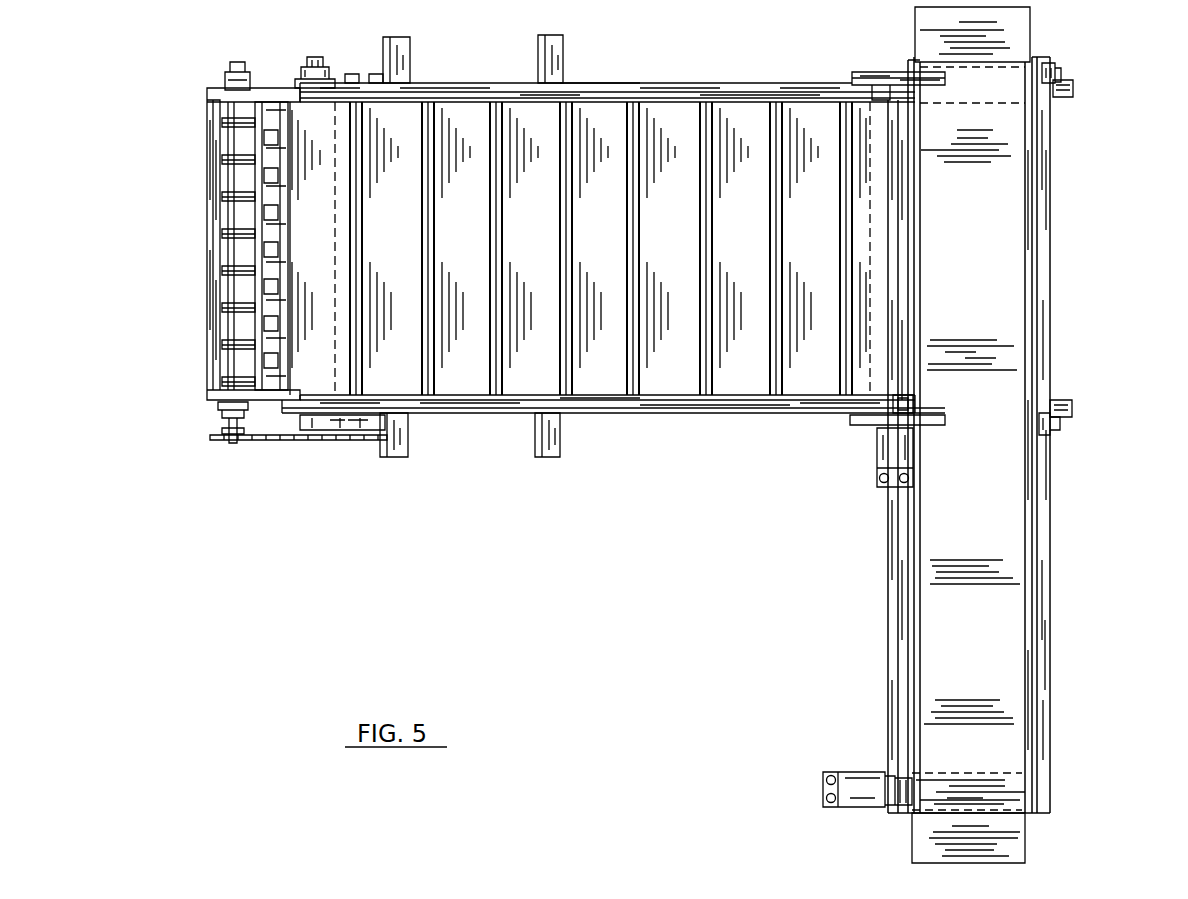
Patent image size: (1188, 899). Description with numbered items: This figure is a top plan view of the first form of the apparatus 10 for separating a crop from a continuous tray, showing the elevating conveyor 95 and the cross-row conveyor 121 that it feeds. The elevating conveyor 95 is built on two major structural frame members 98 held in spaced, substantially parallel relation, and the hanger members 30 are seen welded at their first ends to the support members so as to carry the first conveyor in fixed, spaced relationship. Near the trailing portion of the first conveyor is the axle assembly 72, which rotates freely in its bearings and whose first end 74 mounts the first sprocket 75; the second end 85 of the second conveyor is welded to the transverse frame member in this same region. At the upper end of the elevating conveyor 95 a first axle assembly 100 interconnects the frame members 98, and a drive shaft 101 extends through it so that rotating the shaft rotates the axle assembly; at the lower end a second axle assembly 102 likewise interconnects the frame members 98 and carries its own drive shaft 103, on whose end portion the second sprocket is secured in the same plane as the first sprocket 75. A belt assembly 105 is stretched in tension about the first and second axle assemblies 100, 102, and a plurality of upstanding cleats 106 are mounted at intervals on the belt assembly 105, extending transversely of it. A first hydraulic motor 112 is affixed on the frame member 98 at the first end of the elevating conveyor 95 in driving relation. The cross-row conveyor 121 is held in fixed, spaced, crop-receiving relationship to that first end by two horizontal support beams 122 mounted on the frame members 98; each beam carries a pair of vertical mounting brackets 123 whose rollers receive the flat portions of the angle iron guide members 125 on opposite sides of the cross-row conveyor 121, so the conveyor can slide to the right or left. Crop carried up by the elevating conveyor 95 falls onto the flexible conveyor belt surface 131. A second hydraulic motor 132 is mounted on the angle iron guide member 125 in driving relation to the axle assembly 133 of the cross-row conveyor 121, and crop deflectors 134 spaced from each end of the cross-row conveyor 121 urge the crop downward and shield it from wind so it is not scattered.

The apparatus 10 is at (592, 486).
The hanger members 30 is at (541, 50).
The axle assembly 72 is at (225, 246).
The first end 74 is at (237, 443).
The first sprocket 75 is at (228, 445).
The second end 85 is at (212, 282).
The elevating conveyor 95 is at (592, 84).
The frame members 98 is at (690, 85).
The first axle assembly 100 is at (872, 224).
The drive shaft 101 is at (905, 400).
The second axle assembly 102 is at (336, 240).
The drive shaft 103 is at (317, 57).
The belt assembly 105 is at (581, 248).
The upstanding cleats 106 is at (488, 136).
The first hydraulic motor 112 is at (878, 450).
The cross-row conveyor 121 is at (980, 436).
The horizontal support beams 122 is at (1065, 95).
The vertical mounting brackets 123 is at (1062, 72).
The angle iron guide members 125 is at (1043, 667).
The flexible conveyor belt surface 131 is at (980, 514).
The second hydraulic motor 132 is at (862, 775).
The axle assembly 133 is at (937, 797).
The crop deflectors 134 is at (1022, 25).